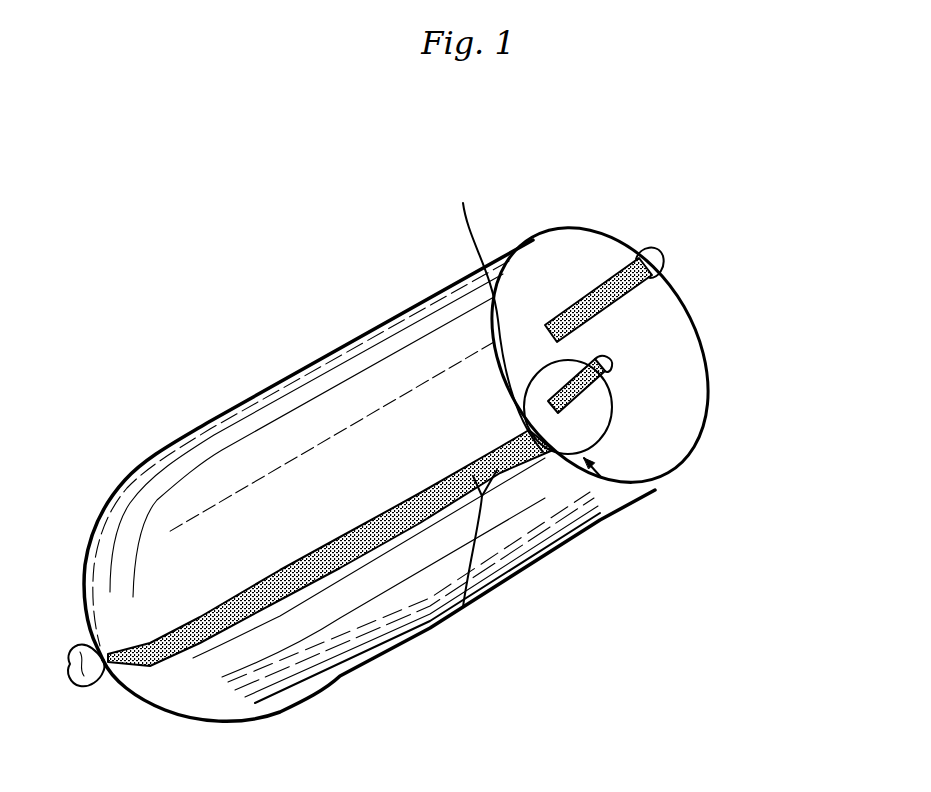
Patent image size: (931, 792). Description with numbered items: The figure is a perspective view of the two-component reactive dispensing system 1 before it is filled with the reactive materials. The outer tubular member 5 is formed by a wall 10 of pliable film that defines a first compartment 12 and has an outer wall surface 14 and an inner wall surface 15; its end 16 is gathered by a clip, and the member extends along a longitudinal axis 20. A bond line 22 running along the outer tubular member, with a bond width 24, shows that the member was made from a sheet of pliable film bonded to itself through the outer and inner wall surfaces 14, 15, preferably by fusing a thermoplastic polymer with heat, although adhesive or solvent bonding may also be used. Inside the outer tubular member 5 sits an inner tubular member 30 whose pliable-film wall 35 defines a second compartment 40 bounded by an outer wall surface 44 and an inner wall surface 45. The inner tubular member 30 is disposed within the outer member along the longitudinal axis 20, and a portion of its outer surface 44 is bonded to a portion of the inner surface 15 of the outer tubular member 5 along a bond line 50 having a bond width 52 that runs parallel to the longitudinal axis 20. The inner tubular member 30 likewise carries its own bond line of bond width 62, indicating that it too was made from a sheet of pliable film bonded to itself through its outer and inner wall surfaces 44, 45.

The dispensing system 1 is at (137, 288).
The outer tubular member 5 is at (682, 287).
The wall 10 is at (686, 467).
The first compartment 12 is at (663, 368).
The outer wall surface 14 is at (541, 556).
The inner wall surface 15 is at (694, 423).
The end 16 is at (88, 688).
The longitudinal axis 20 is at (48, 427).
The bond line 22 is at (598, 297).
The bond width 24 is at (654, 262).
The inner tubular member 30 is at (596, 404).
The wall 35 is at (579, 436).
The second compartment 40 is at (610, 427).
The outer wall surface 44 is at (521, 388).
The inner wall surface 45 is at (600, 405).
The bond line 50 is at (447, 476).
The bond width 52 is at (463, 607).
The bond width 62 is at (612, 364).